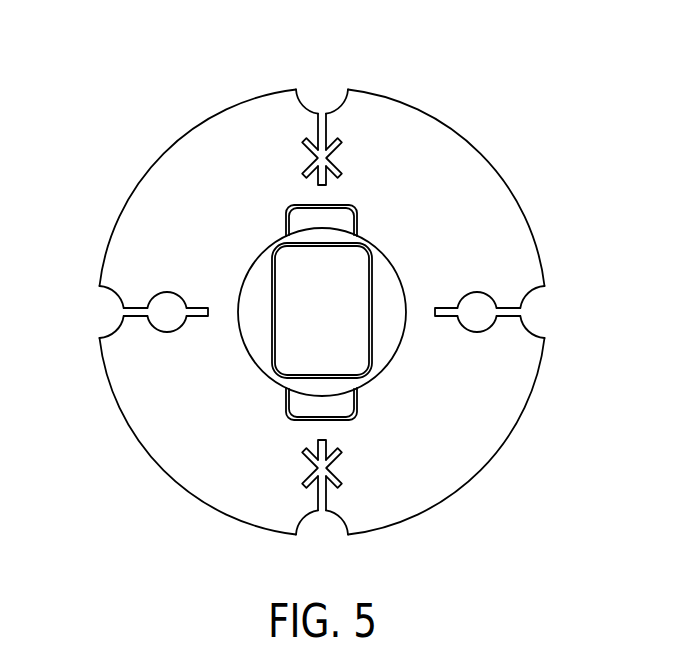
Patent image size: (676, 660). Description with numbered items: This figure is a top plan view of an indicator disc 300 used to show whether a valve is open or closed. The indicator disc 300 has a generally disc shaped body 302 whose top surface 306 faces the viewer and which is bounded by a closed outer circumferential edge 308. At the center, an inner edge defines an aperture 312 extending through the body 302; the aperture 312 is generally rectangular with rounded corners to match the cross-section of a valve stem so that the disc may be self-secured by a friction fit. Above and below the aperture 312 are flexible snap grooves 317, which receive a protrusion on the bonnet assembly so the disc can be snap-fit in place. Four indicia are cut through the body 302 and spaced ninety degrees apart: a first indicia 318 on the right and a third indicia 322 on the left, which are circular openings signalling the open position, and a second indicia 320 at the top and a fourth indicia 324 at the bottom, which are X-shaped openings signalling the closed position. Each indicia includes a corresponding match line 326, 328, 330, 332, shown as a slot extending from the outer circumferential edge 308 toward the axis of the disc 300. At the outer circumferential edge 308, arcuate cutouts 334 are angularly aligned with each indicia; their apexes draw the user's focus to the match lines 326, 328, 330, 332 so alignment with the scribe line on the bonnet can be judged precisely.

The indicator disc 300 is at (543, 121).
The disc shaped body 302 is at (457, 157).
The top surface 306 is at (168, 170).
The outer circumferential edge 308 is at (148, 460).
The aperture 312 is at (337, 322).
The flexible snap grooves 317 is at (343, 223).
The first indicia 318 is at (477, 333).
The second indicia 320 is at (334, 161).
The third indicia 322 is at (164, 291).
The fourth indicia 324 is at (307, 458).
The match line 326 is at (511, 307).
The match line 328 is at (317, 128).
The match line 330 is at (137, 317).
The match line 332 is at (318, 492).
The cutouts 334 is at (340, 102).